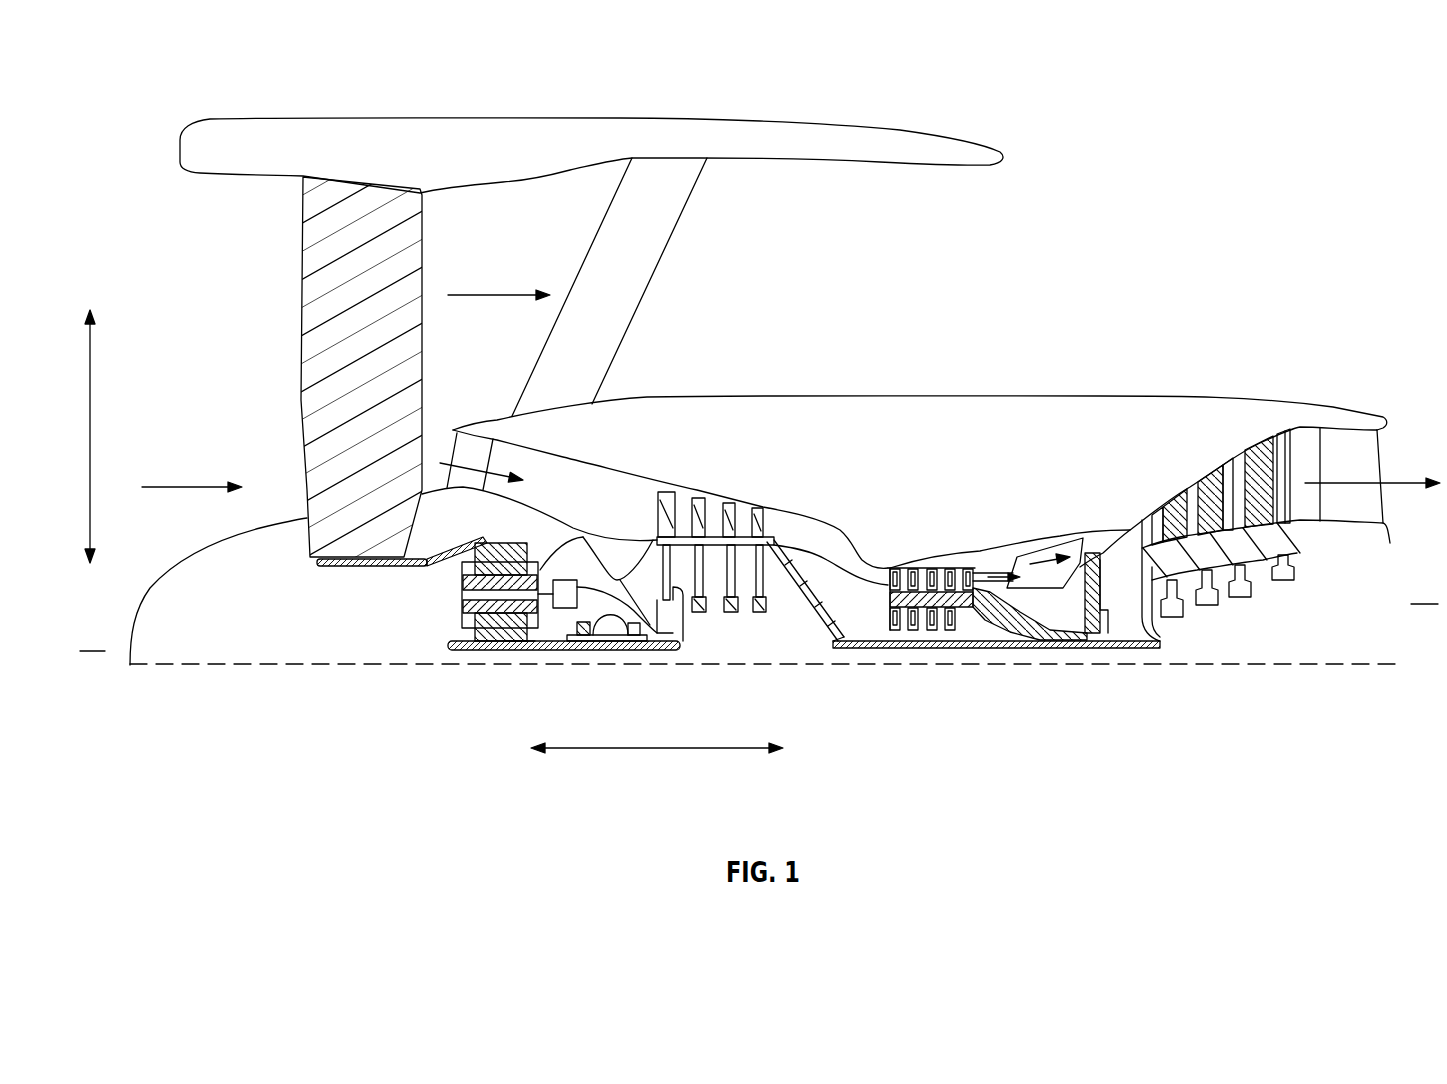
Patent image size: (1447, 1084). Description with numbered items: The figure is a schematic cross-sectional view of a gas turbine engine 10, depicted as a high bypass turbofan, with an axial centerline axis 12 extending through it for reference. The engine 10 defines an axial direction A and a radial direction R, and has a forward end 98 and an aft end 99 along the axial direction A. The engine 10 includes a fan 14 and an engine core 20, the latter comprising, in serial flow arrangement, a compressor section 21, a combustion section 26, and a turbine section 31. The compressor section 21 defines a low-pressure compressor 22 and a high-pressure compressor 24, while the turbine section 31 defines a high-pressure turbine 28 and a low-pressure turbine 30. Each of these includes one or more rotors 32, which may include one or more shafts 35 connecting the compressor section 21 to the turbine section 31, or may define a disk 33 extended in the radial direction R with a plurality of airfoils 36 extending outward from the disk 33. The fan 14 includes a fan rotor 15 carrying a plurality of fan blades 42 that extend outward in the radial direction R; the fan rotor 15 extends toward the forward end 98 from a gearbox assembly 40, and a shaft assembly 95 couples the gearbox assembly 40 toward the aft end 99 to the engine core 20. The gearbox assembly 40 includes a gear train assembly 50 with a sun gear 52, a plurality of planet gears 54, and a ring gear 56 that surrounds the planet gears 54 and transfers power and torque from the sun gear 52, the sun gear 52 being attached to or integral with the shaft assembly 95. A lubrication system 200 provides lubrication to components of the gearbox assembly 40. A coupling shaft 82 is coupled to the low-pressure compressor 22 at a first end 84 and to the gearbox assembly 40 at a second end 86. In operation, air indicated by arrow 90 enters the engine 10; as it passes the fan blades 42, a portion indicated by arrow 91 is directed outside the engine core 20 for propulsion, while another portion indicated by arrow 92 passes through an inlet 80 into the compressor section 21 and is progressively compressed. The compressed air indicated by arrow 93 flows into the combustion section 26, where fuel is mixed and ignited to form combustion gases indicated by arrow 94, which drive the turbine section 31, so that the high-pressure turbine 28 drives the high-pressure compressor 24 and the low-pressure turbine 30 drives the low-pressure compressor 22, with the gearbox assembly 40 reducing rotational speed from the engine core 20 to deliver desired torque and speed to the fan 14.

The engine 10 is at (1158, 180).
The axis 12 is at (246, 667).
The fan 14 is at (286, 449).
The fan rotor 15 is at (341, 567).
The engine core 20 is at (882, 412).
The compressor section 21 is at (905, 484).
The low-pressure compressor 22 is at (745, 482).
The high-pressure compressor 24 is at (927, 562).
The combustion section 26 is at (1069, 506).
The high-pressure turbine 28 is at (1093, 557).
The low-pressure turbine 30 is at (1194, 490).
The turbine section 31 is at (1219, 447).
The rotors 32 is at (760, 617).
The disk 33 is at (708, 592).
The shafts 35 is at (891, 650).
The airfoils 36 is at (708, 492).
The gearbox assembly 40 is at (580, 535).
The fan blades 42 is at (316, 285).
The gear train assembly 50 is at (450, 575).
The sun gear 52 is at (473, 636).
The planet gears 54 is at (508, 548).
The ring gear 56 is at (483, 539).
The inlet 80 is at (442, 432).
The coupling shaft 82 is at (567, 662).
The first end 84 is at (617, 652).
The second end 86 is at (462, 652).
The arrow 90 is at (177, 486).
The arrow 91 is at (490, 294).
The arrow 92 is at (497, 470).
The arrow 93 is at (990, 570).
The arrow 94 is at (1050, 560).
The shaft assembly 95 is at (516, 662).
The forward end 98 is at (91, 636).
The aft end 99 is at (1425, 589).
The lubrication system 200 is at (658, 650).
The radial direction R is at (96, 408).
The axial direction A is at (660, 750).